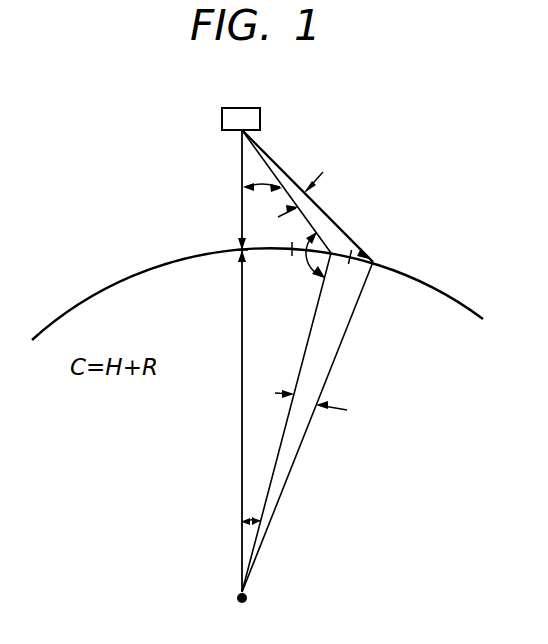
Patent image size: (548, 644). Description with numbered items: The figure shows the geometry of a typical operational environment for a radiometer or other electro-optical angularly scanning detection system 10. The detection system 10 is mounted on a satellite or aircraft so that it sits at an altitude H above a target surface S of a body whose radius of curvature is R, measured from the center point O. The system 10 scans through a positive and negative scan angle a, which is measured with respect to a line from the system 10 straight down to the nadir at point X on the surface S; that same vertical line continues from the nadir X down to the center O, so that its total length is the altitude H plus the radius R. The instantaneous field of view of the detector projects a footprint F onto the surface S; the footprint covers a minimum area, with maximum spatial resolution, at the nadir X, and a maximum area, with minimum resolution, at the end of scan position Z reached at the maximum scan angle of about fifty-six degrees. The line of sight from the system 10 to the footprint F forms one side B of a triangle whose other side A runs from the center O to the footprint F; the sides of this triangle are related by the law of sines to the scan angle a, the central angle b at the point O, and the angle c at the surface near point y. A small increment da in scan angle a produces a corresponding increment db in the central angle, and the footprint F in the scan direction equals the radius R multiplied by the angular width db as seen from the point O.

The electro-optical angularly scanning detection system 10 is at (260, 114).
The target surface S is at (418, 281).
The center of curvature of the body O is at (261, 603).
The nadir point X is at (238, 253).
The footprint F is at (375, 257).
The end of scan position Z is at (366, 258).
The altitude H is at (226, 190).
The radius of curvature R is at (221, 421).
The side A of the scan triangle A is at (307, 427).
The side B of the scan triangle B is at (307, 196).
The scan angle a is at (262, 176).
The angle b is at (251, 506).
The angle c is at (312, 232).
The point y is at (289, 263).
The scan angle increment da is at (314, 184).
The angular width of the footprint db is at (316, 395).